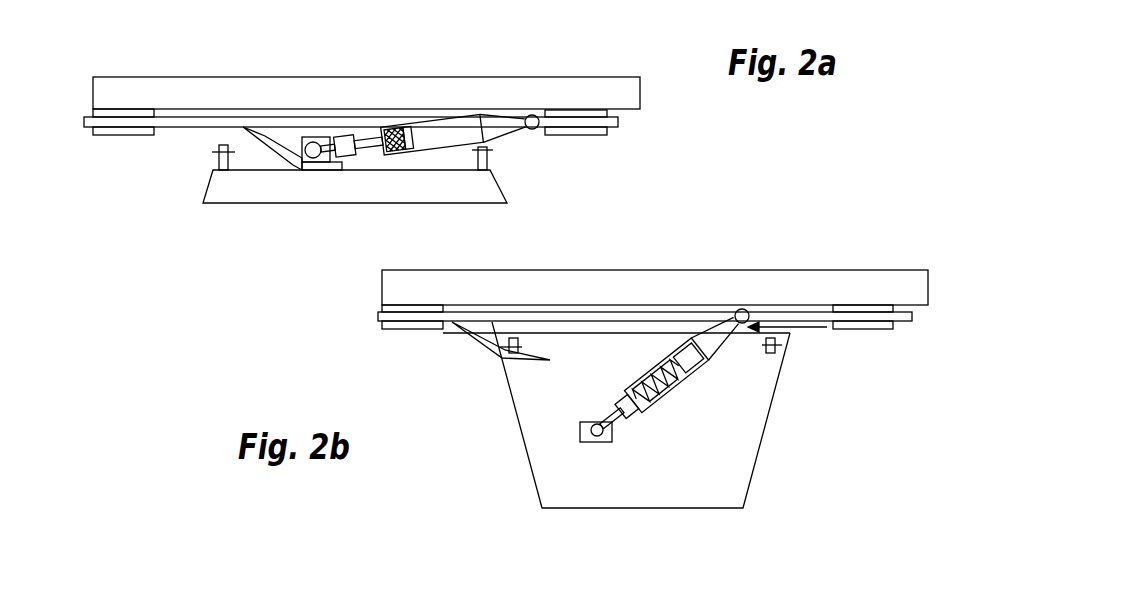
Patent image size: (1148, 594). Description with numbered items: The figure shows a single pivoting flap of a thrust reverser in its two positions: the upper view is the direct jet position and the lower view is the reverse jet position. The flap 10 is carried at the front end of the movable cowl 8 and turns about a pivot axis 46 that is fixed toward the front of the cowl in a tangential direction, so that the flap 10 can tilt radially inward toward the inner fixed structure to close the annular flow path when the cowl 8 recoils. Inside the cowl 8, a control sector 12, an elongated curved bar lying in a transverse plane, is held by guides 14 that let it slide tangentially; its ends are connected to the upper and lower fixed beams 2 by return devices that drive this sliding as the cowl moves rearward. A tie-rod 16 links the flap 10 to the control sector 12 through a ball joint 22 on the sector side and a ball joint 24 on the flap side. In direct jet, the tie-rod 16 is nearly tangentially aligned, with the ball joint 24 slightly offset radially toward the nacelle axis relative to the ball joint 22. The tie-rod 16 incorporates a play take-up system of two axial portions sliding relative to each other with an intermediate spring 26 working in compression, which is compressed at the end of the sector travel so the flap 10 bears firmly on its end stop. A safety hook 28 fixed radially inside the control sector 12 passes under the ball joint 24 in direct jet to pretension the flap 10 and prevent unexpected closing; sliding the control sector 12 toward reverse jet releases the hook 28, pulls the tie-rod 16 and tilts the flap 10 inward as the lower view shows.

In FIG. 2A, the fixed beam 2 is at (458, 0).
In FIG. 2A, the movable cowl 8 is at (610, 77).
In FIG. 2B, the movable cowl 8 is at (885, 270).
In FIG. 2A, the pivoting flap 10 is at (285, 203).
In FIG. 2B, the pivoting flap 10 is at (525, 447).
In FIG. 2A, the control sector 12 is at (180, 128).
In FIG. 2B, the control sector 12 is at (450, 325).
In FIG. 2A, the guide 14 is at (112, 135).
In FIG. 2B, the guide 14 is at (388, 333).
In FIG. 2A, the tie-rod 16 is at (433, 147).
In FIG. 2B, the tie-rod 16 is at (680, 380).
In FIG. 2A, the ball joint 22 is at (530, 115).
In FIG. 2B, the ball joint 22 is at (742, 309).
In FIG. 2A, the ball joint 24 is at (310, 146).
In FIG. 2B, the ball joint 24 is at (588, 422).
In FIG. 2A, the intermediate spring 26 is at (397, 147).
In FIG. 2B, the intermediate spring 26 is at (647, 417).
In FIG. 2A, the safety hook 28 is at (253, 137).
In FIG. 2B, the safety hook 28 is at (477, 340).
In FIG. 2A, the pivot axis 46 is at (493, 150).
In FIG. 2B, the pivot axis 46 is at (782, 345).